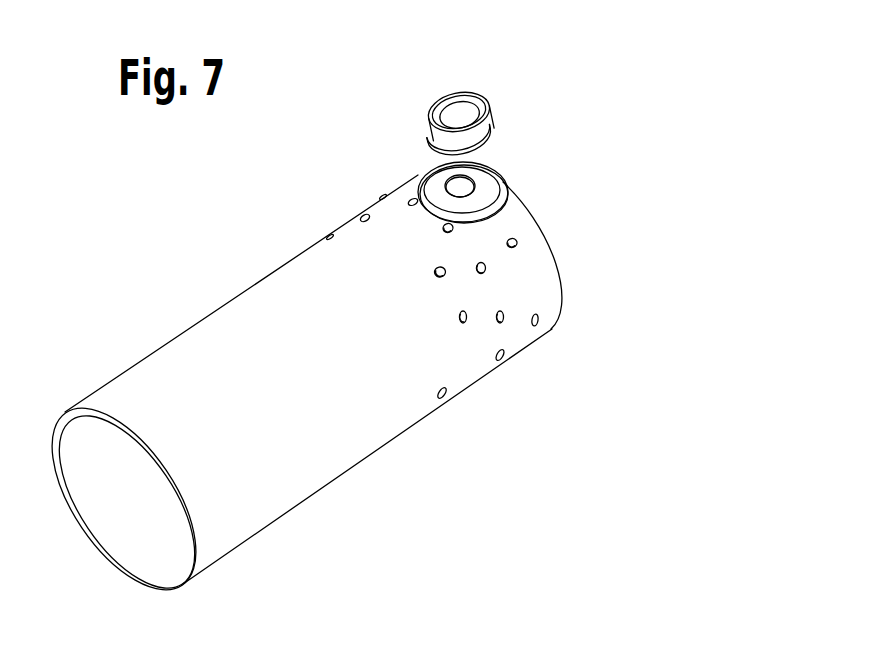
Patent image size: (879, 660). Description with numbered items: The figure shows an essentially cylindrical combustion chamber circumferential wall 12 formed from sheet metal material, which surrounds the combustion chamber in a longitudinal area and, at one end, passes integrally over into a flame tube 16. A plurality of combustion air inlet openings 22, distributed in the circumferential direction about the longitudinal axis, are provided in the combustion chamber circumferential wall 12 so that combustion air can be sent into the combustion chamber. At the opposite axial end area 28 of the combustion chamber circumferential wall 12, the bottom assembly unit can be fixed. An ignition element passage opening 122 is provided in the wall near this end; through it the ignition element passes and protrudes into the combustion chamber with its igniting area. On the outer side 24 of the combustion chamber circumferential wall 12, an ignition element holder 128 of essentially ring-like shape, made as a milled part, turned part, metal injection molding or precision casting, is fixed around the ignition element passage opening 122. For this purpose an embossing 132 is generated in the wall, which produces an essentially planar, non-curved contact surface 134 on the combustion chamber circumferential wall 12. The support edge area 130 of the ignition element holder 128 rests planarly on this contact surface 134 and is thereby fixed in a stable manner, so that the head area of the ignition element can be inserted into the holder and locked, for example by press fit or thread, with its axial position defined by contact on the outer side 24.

The combustion chamber circumferential wall 12 is at (478, 380).
The flame tube 16 is at (258, 535).
The combustion air inlet openings 22 is at (552, 330).
The outer side 24 is at (236, 330).
The axial end area 28 is at (555, 246).
The ignition element passage opening 122 is at (463, 190).
The ignition element holder 128 is at (478, 93).
The support edge area 130 is at (503, 141).
The embossing 132 is at (420, 178).
The contact surface 134 is at (438, 189).